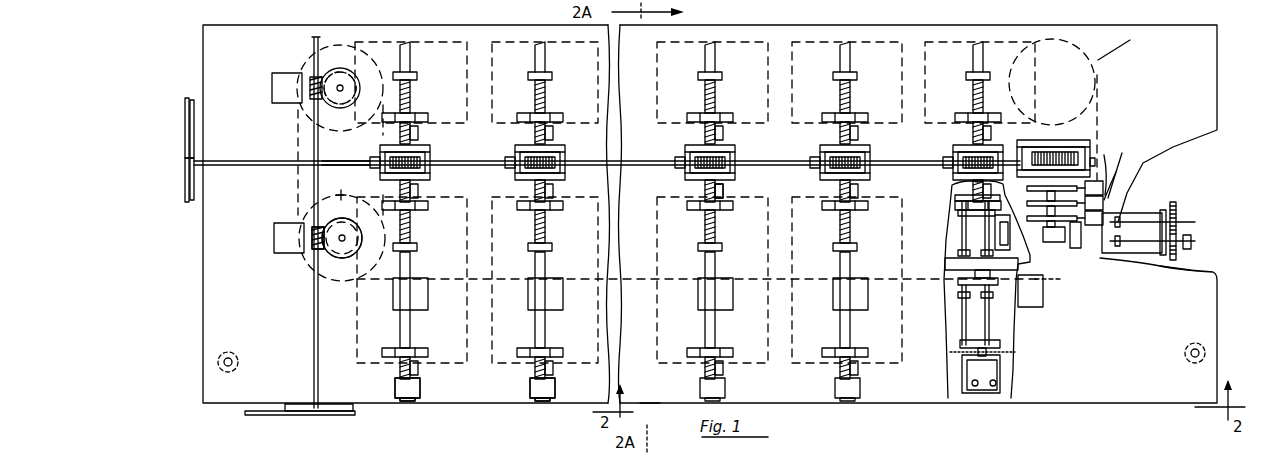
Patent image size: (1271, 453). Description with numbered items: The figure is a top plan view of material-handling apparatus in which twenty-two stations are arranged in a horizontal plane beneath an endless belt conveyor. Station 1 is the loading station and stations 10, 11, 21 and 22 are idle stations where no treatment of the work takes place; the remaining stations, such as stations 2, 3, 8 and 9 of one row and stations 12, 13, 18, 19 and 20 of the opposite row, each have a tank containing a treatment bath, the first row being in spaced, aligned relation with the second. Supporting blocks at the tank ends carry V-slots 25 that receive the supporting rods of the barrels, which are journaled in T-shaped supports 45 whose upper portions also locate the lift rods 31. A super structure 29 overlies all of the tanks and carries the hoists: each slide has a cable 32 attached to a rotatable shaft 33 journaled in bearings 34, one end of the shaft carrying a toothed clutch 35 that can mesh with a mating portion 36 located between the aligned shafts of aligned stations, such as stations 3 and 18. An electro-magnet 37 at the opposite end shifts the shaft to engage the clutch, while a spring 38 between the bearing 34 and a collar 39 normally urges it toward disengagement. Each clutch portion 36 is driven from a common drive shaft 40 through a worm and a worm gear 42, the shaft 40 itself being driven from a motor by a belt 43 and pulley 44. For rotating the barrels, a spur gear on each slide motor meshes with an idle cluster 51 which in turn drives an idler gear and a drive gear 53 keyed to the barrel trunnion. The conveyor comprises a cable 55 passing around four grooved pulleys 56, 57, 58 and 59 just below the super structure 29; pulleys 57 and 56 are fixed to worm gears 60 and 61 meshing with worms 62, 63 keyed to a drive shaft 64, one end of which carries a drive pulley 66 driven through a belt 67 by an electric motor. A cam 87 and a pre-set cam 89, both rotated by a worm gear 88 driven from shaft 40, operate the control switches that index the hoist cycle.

The loading station 1 is at (1012, 342).
The station 2 is at (898, 346).
The station 3 is at (764, 355).
The station 8 is at (594, 357).
The station 9 is at (463, 360).
The idle station 10 is at (296, 268).
The idle station 11 is at (297, 63).
The station 12 is at (451, 70).
The station 13 is at (523, 70).
The station 18 is at (686, 70).
The station 19 is at (824, 70).
The station 20 is at (953, 75).
The idle station 21 is at (1122, 50).
The idle station 22 is at (1100, 262).
The V-slot 25 is at (700, 140).
The super structure 29 is at (652, 393).
The lift rod 31 is at (1137, 217).
The cable 32 is at (704, 370).
The rotatable shaft 33 is at (716, 48).
The bearing 34 is at (700, 208).
The toothed clutch 35 is at (724, 185).
The mating clutch portion 36 is at (716, 147).
The electro-magnet 37 is at (725, 388).
The spring 38 is at (715, 98).
The collar 39 is at (716, 74).
The drive shaft 40 is at (594, 160).
The worm gear 42 is at (736, 158).
The belt 43 is at (186, 105).
The pulley 44 is at (187, 193).
The T-shaped support 45 is at (1168, 210).
The idle cluster 51 is at (1183, 246).
The drive gear 53 is at (1183, 268).
The cable 55 is at (296, 181).
The grooved pulley 56 is at (341, 186).
The grooved pulley 57 is at (346, 151).
The grooved pulley 58 is at (1085, 82).
The grooved pulley 59 is at (1055, 282).
The worm gear 60 is at (349, 258).
The worm gear 61 is at (348, 105).
The worm 62 is at (313, 258).
The worm 63 is at (320, 76).
The drive shaft 64 is at (314, 342).
The drive pulley 66 is at (318, 416).
The belt 67 is at (268, 417).
The cam 87 is at (1056, 241).
The worm gear 88 is at (1077, 160).
The cam 89 is at (1030, 187).